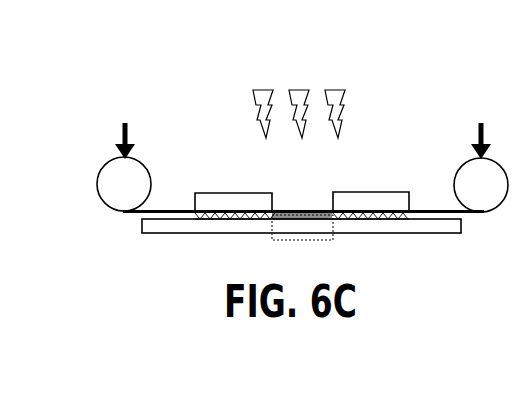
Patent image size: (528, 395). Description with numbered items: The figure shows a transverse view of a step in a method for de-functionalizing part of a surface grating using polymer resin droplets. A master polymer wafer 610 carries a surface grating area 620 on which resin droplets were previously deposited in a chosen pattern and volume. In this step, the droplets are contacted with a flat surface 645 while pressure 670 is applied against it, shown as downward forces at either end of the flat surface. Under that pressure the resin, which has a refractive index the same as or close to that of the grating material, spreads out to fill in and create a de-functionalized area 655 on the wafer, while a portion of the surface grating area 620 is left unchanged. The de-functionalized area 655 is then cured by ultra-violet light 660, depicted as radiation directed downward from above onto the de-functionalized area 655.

The master polymer wafer 610 is at (176, 233).
The surface grating area 620 is at (302, 240).
The flat surface 645 is at (174, 211).
The de-functionalized area 655 is at (366, 191).
The ultra-violet (UV) light 660 is at (299, 101).
The pressure 670 is at (115, 142).